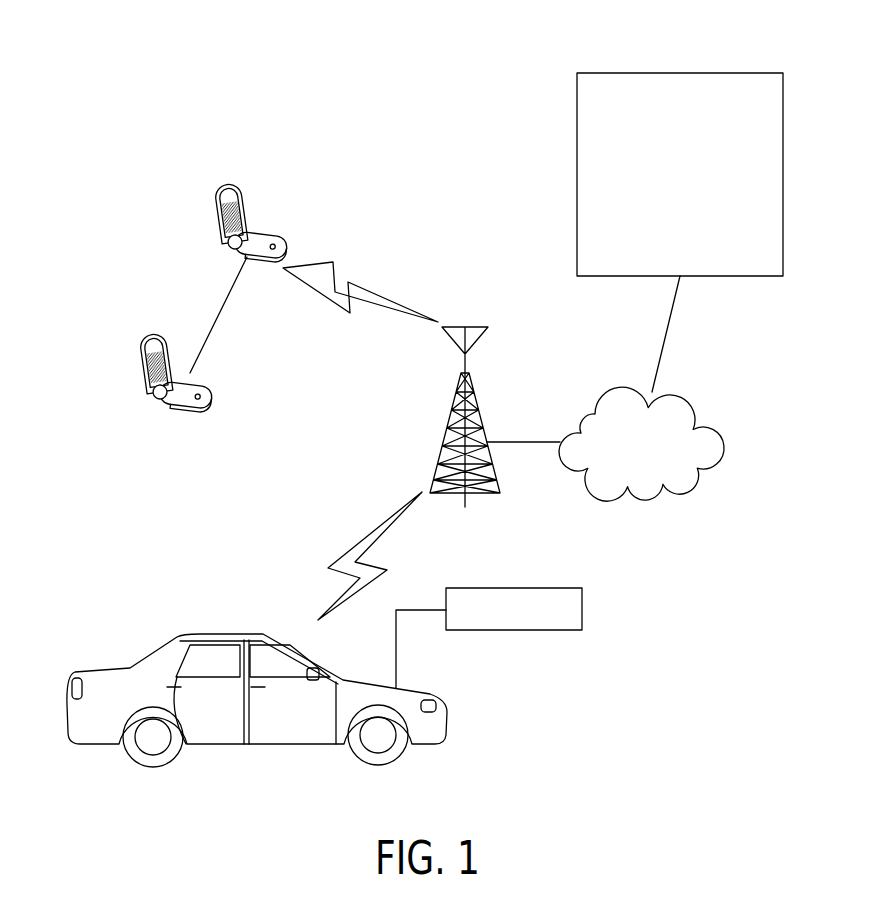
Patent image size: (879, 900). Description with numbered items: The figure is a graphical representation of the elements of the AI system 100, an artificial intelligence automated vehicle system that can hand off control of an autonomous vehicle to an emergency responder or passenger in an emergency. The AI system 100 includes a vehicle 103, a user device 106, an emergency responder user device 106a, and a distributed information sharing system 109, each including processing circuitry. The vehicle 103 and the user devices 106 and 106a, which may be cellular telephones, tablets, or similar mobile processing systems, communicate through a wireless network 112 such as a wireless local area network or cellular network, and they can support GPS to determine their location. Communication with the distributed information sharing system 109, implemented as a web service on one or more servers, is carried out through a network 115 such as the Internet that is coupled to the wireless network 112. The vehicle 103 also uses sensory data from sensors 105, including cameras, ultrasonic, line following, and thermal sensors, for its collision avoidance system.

The AI system 100 is at (380, 96).
The vehicle 103 is at (301, 723).
The sensors 105 is at (531, 625).
The user device 106 is at (218, 222).
The emergency responder user device 106a is at (141, 381).
The distributed information sharing system 109 is at (577, 134).
The wireless network 112 is at (445, 432).
The network 115 is at (700, 413).